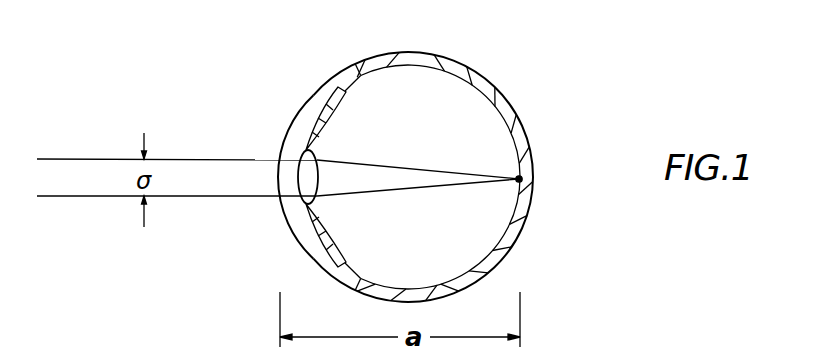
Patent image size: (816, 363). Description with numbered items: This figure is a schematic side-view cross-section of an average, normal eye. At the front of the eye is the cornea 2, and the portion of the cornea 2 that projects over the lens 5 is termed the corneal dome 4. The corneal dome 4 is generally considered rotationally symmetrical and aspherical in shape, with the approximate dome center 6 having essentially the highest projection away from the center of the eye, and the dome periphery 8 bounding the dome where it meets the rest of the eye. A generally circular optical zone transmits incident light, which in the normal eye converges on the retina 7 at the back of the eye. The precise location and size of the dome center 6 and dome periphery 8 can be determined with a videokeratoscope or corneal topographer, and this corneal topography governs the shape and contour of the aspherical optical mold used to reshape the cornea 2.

The cornea 2 is at (345, 71).
The corneal dome 4 is at (296, 122).
The lens 5 is at (303, 151).
The dome center 6 is at (277, 180).
The retina 7 is at (497, 95).
The dome periphery 8 is at (311, 104).